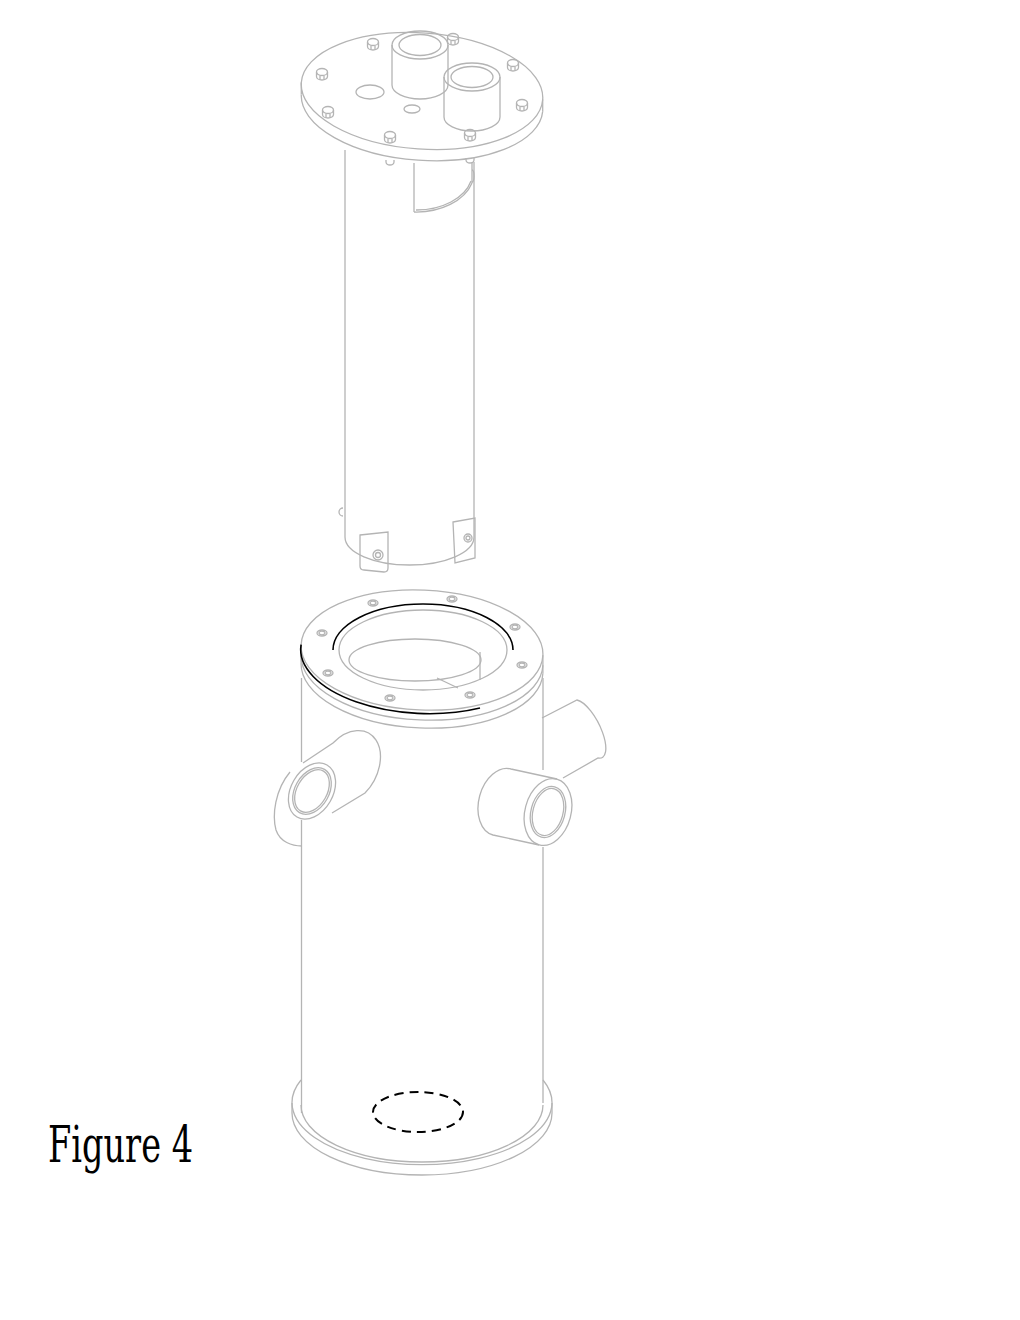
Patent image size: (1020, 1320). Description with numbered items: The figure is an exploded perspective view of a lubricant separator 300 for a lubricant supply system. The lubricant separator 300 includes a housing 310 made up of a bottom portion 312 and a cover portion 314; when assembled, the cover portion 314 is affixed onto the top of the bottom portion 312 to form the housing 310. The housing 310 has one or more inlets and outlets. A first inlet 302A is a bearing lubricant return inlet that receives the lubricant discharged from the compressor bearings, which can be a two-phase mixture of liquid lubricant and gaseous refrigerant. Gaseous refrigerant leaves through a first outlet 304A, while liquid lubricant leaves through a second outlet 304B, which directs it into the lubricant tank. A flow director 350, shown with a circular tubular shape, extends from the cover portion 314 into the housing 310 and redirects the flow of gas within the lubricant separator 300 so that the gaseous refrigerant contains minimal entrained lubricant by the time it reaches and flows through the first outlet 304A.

The lubricant separator 300 is at (178, 109).
The housing 310 is at (808, 333).
The cover portion 314 is at (532, 120).
The bottom portion 312 is at (542, 657).
The flow director 350 is at (345, 403).
The first inlet 302A is at (595, 712).
The first outlet 304A is at (298, 767).
The second outlet 304B is at (450, 1128).